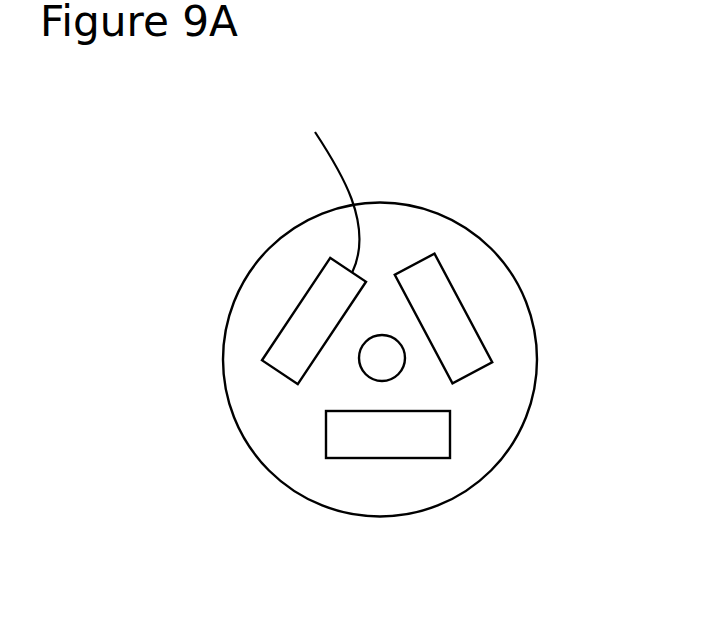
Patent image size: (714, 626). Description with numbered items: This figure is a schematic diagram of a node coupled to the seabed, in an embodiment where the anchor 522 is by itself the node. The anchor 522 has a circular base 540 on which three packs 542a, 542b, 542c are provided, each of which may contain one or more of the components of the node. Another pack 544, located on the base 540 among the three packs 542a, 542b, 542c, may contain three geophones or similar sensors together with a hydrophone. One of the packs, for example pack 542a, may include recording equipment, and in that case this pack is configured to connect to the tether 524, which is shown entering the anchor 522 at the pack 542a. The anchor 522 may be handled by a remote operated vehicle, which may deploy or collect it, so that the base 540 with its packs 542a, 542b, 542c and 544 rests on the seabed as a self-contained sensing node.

The anchor 522 is at (428, 108).
The tether 524 is at (323, 157).
The circular base 540 is at (507, 405).
The pack 542a is at (305, 322).
The pack 542b is at (448, 312).
The pack 542c is at (340, 433).
The pack 544 is at (387, 362).